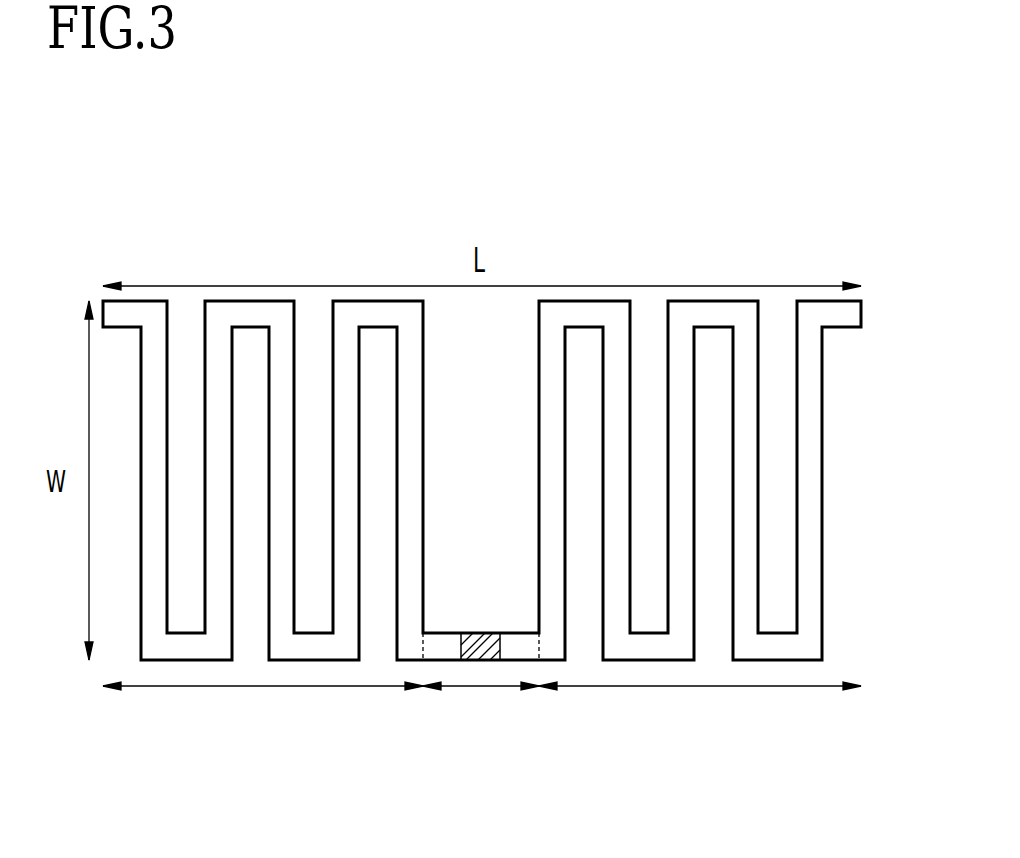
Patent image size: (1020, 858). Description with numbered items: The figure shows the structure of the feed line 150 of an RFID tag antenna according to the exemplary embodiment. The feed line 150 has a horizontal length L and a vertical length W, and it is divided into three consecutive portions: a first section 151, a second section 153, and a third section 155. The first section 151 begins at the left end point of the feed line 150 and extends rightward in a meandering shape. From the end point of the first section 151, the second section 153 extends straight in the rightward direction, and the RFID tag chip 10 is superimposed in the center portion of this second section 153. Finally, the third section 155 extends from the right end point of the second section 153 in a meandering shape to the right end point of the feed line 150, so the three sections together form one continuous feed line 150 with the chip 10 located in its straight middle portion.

The feed line 150 is at (862, 313).
The RFID tag chip 10 is at (480, 632).
The first section 151 is at (257, 805).
The second section 153 is at (481, 805).
The third section 155 is at (703, 805).